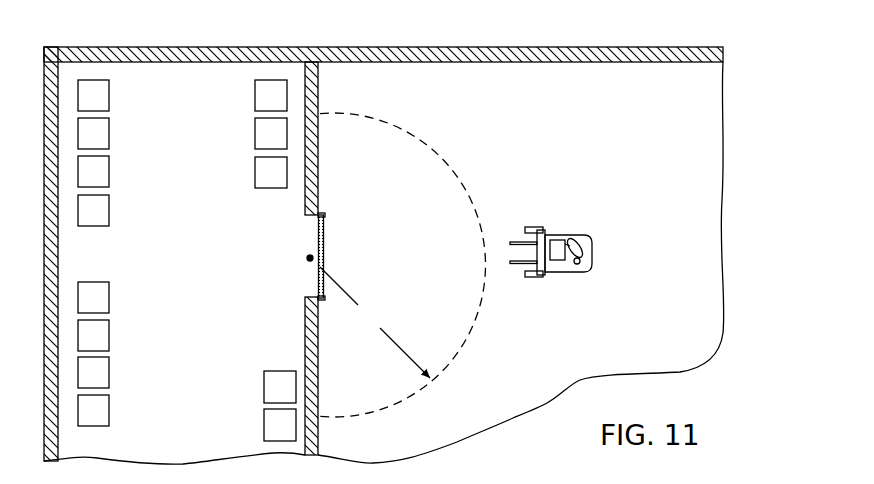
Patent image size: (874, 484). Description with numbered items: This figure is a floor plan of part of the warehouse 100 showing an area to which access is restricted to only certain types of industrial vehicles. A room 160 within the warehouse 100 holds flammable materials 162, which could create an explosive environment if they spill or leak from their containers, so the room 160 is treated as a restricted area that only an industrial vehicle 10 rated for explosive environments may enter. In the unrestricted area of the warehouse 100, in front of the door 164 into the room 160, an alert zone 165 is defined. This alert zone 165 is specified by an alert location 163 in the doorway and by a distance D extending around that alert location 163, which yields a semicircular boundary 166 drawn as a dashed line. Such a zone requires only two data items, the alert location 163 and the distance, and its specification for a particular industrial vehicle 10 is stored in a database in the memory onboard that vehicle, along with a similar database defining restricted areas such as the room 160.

The warehouse 100 is at (423, 45).
The room 160 is at (187, 260).
The flammable materials 162 is at (103, 108).
The alert location 163 is at (306, 257).
The door 164 is at (325, 245).
The alert zone 165 is at (471, 264).
The boundary 166 is at (424, 140).
The industrial vehicle 10 is at (572, 237).